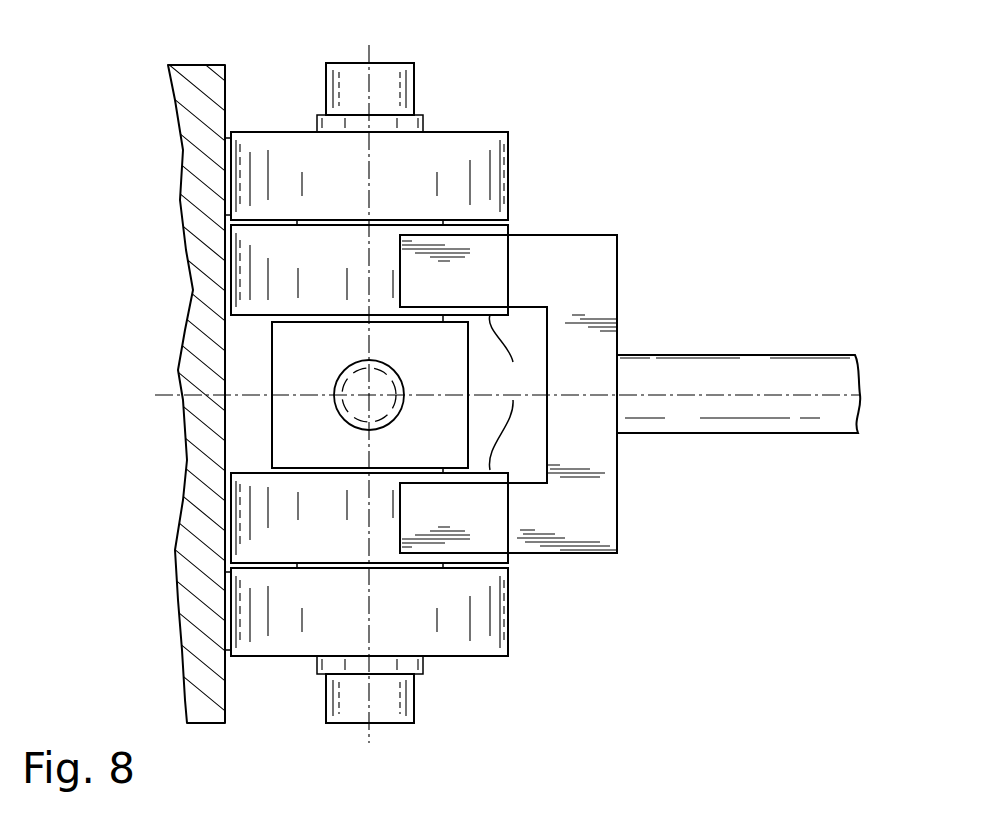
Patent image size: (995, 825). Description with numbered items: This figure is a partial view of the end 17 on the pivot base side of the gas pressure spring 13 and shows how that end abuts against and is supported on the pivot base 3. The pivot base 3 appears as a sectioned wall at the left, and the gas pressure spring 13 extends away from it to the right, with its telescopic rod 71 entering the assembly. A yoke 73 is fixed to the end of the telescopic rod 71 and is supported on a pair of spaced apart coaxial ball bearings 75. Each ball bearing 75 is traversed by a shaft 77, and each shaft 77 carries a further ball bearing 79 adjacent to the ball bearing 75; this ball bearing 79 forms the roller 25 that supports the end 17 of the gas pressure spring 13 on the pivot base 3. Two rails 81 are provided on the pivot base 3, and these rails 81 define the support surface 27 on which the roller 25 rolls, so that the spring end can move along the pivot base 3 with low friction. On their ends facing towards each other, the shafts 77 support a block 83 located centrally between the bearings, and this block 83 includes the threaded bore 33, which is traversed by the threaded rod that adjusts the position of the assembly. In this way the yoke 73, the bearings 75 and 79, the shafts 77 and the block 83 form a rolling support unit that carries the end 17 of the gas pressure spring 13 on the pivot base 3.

The pivot base 3 is at (213, 64).
The gas pressure spring 13 is at (818, 355).
The end on the pivot base side 17 is at (727, 342).
The roller 25 is at (509, 193).
The support surface 27 is at (230, 183).
The threaded bore 33 is at (355, 372).
The telescopic rod 71 is at (743, 433).
The yoke 73 is at (612, 234).
The ball bearing 75 is at (508, 392).
The shaft 77 is at (414, 72).
The further ball bearing 79 is at (509, 145).
The rail 81 is at (229, 152).
The block 83 is at (320, 452).